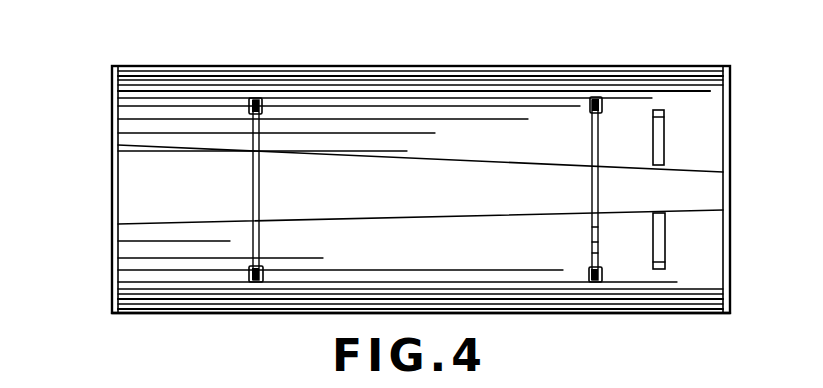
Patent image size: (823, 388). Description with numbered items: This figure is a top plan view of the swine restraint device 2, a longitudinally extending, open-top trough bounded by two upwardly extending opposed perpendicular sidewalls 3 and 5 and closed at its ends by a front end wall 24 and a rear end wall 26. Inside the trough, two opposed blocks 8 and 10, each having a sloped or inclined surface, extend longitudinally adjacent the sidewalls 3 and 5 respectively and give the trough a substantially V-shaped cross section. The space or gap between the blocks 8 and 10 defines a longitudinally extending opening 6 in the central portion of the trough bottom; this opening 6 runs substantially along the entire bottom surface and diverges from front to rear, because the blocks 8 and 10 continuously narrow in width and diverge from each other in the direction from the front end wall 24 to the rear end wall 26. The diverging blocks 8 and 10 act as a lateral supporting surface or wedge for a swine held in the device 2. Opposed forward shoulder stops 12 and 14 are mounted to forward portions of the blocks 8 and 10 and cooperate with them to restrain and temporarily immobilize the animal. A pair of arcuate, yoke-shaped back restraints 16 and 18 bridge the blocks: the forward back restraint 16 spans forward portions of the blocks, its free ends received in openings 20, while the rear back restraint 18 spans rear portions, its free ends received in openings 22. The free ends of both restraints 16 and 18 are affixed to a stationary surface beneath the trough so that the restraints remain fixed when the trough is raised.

The swine restraint device 2 is at (62, 152).
The sidewall 3 is at (552, 66).
The sidewall 5 is at (548, 314).
The opening 6 is at (412, 201).
The block 8 is at (124, 88).
The block 10 is at (187, 294).
The forward shoulder stop 12 is at (665, 155).
The forward shoulder stop 14 is at (665, 237).
The back restraint 16 is at (592, 186).
The back restraint 18 is at (253, 184).
The openings 20 is at (602, 100).
The openings 22 is at (268, 97).
The front end wall 24 is at (731, 186).
The rear end wall 26 is at (112, 165).